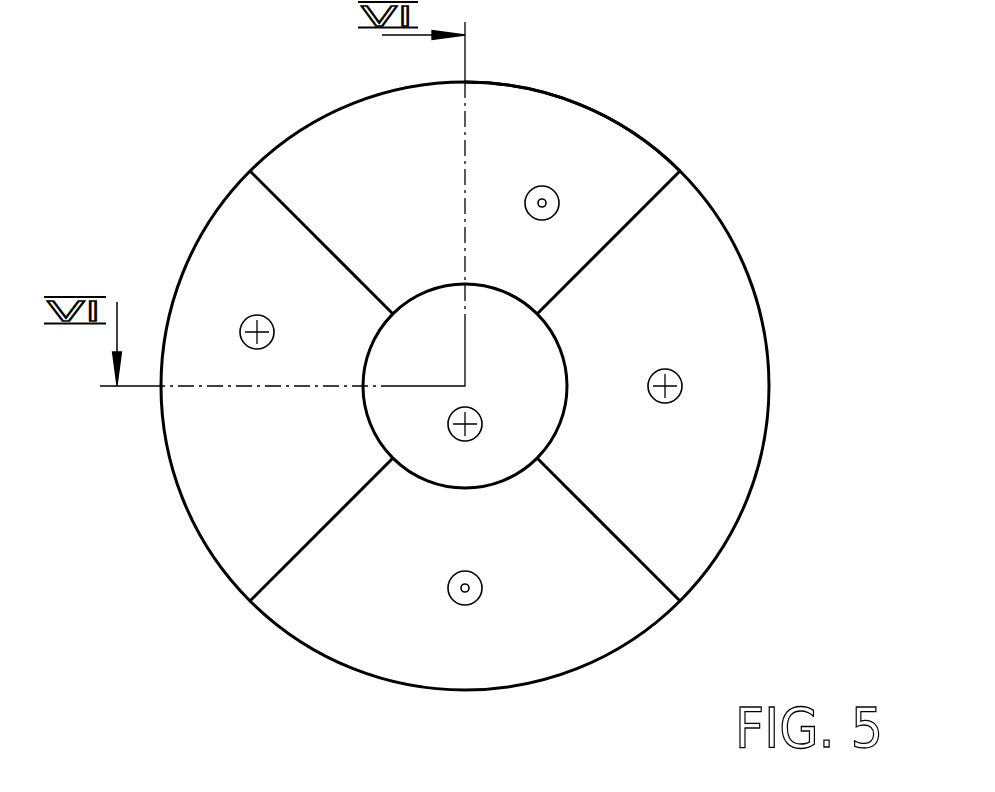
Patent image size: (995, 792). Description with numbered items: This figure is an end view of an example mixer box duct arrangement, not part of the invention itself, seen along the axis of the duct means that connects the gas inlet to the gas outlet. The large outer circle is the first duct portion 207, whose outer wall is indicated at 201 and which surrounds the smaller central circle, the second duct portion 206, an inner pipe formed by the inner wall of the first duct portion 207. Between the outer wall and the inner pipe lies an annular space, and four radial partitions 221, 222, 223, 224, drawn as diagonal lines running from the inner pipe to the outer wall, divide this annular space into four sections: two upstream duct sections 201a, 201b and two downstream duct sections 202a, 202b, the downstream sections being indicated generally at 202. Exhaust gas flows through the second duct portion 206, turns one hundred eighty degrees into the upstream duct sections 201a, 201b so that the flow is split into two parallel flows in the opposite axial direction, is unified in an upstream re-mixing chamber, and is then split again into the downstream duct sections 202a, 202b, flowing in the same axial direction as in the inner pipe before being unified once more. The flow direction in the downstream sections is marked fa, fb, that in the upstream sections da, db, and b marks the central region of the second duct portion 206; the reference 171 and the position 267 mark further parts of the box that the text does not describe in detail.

The rotor disk 201 is at (630, 100).
The first duct portion 207 is at (572, 78).
The second duct portion 206 is at (408, 272).
The partition 221 is at (315, 238).
The partition 222 is at (618, 238).
The partition 223 is at (610, 530).
The partition 224 is at (317, 528).
The upstream duct section 201a is at (324, 187).
The upstream duct section 201b is at (472, 650).
The sector segment 202 is at (135, 475).
The downstream duct section 202a is at (203, 317).
The downstream duct section 202b is at (688, 268).
The housing wall 171 is at (158, 422).
The bore 267 is at (372, 428).
The force point a fa is at (246, 321).
The force point b fb is at (683, 383).
The center point b is at (452, 436).
The displacement point a da is at (560, 195).
The displacement point b db is at (448, 590).